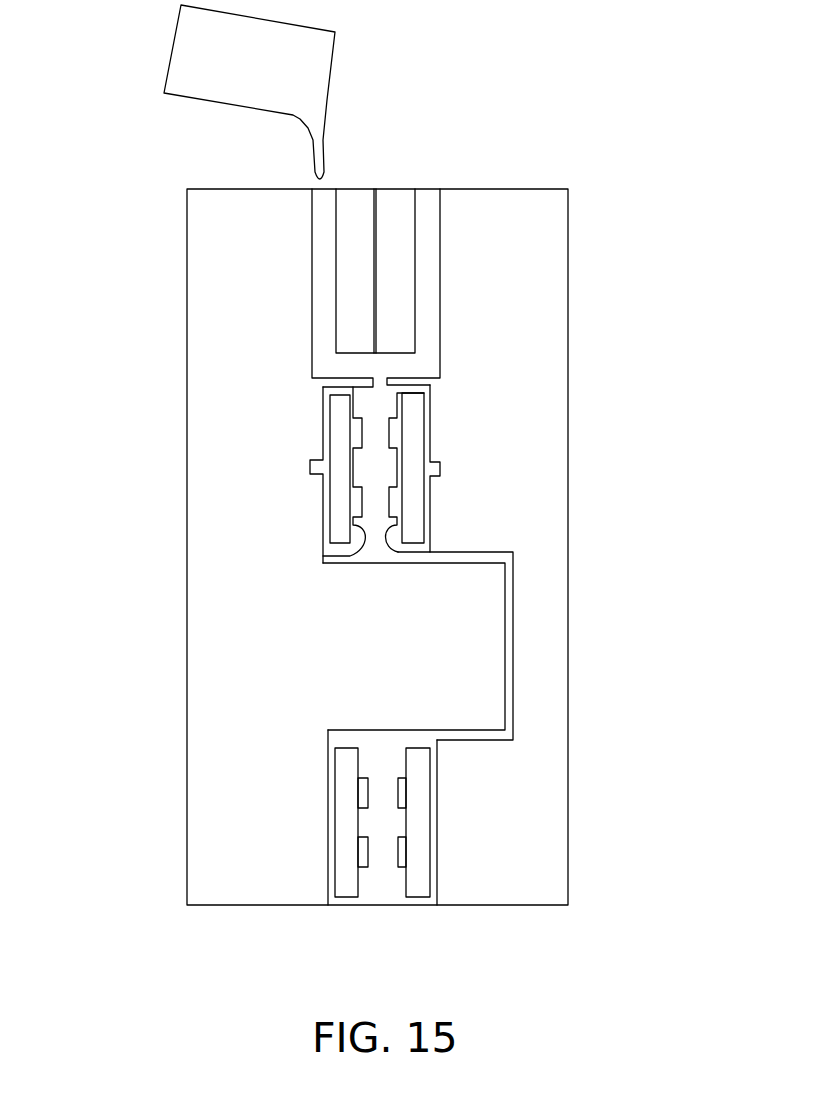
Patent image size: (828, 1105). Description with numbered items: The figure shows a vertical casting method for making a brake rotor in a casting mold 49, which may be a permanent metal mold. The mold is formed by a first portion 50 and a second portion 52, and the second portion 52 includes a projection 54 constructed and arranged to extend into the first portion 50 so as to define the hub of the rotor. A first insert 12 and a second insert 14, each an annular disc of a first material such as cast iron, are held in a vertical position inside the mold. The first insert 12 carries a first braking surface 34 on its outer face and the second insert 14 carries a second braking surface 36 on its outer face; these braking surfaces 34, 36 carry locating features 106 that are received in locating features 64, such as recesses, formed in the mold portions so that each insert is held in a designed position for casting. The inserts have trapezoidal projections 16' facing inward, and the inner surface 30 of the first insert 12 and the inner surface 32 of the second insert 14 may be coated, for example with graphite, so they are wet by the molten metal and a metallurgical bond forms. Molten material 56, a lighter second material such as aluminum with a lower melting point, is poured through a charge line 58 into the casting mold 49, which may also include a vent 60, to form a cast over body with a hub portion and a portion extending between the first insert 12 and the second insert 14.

The casting mold 49 is at (548, 171).
The molten material 56 is at (328, 143).
The charge line 58 is at (313, 213).
The vent 60 is at (430, 189).
The first portion of casting mold 50 is at (515, 290).
The second portion of casting mold 52 is at (232, 308).
The projection 54 is at (490, 660).
The second insert 14 is at (340, 492).
The first insert 12 is at (425, 490).
The trapezoidal projections 16' is at (441, 634).
The first braking surface 34 is at (431, 455).
The locating features 64 is at (313, 462).
The locating features 106 is at (313, 473).
The second braking surface 36 is at (323, 517).
The inner surface of second insert 32 is at (345, 554).
The inner surface of first insert 30 is at (398, 562).